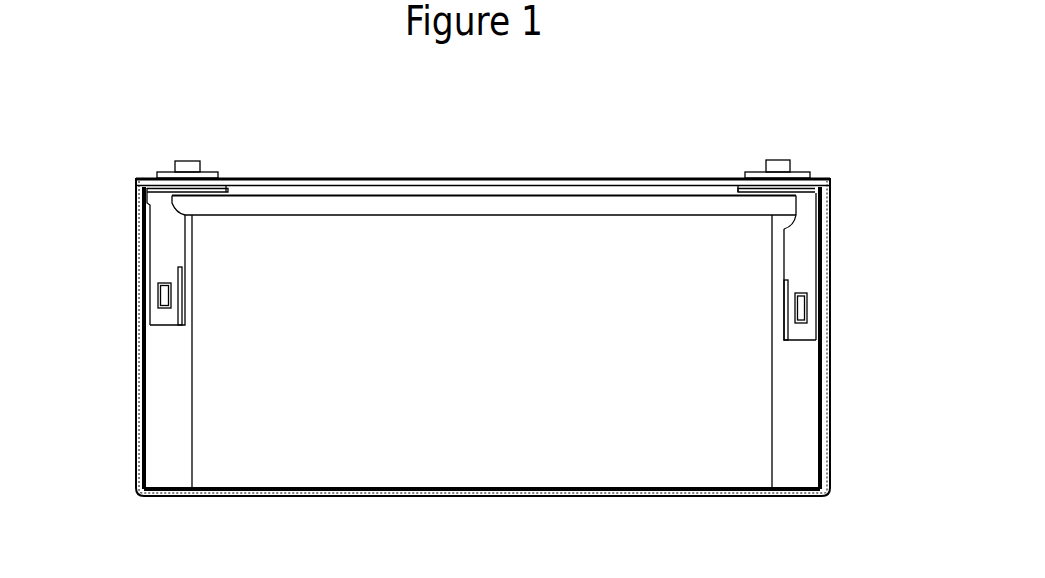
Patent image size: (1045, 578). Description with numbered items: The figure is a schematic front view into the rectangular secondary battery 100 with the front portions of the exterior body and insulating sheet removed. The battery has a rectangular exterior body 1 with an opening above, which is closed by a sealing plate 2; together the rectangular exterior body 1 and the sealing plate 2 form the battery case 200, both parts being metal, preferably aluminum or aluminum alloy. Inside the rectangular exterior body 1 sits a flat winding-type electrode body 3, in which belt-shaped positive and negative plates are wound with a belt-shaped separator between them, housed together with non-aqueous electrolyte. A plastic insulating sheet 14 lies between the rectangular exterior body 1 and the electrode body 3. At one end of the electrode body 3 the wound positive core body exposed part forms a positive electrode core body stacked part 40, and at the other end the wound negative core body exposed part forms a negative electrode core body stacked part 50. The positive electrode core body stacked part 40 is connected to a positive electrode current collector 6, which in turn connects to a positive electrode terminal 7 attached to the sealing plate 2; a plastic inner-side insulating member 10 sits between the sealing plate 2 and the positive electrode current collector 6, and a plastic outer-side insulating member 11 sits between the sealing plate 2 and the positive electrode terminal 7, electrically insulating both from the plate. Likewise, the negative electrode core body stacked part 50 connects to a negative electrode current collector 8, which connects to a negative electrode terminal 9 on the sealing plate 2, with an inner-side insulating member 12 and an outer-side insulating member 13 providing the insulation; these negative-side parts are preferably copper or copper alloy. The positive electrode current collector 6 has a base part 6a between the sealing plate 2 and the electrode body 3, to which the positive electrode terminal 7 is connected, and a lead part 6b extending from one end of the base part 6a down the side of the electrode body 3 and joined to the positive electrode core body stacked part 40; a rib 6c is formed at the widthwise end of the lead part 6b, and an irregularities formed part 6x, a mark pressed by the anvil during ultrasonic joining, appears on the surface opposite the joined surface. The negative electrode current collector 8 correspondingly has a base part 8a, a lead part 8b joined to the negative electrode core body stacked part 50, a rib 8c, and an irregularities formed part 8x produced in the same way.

The rectangular secondary battery 100 is at (107, 104).
The rectangular exterior body 1 is at (829, 402).
The sealing plate 2 is at (362, 178).
The electrode body 3 is at (490, 477).
The positive electrode current collector 6 is at (811, 246).
The base part 6a is at (742, 190).
The lead part 6b is at (802, 258).
The rib 6c is at (785, 315).
The irregularities formed part 6x is at (808, 297).
The positive electrode terminal 7 is at (777, 160).
The negative electrode current collector 8 is at (152, 250).
The base part 8a is at (230, 190).
The lead part 8b is at (165, 277).
The rib 8c is at (180, 302).
The irregularities formed part 8x is at (160, 293).
The negative electrode terminal 9 is at (186, 161).
The inner-side insulating member 10 is at (800, 177).
The outer-side insulating member 11 is at (748, 173).
The inner-side insulating member 12 is at (226, 186).
The outer-side insulating member 13 is at (216, 172).
The insulating sheet 14 is at (138, 443).
The positive electrode core body stacked part 40 is at (798, 477).
The negative electrode core body stacked part 50 is at (162, 476).
The battery case 200 is at (838, 364).